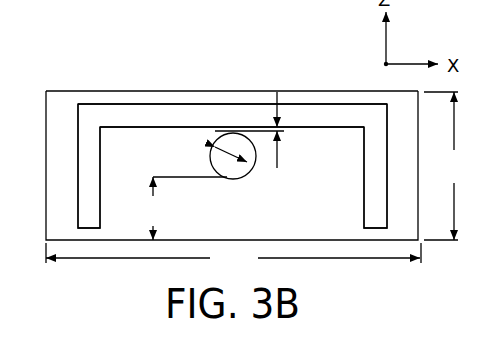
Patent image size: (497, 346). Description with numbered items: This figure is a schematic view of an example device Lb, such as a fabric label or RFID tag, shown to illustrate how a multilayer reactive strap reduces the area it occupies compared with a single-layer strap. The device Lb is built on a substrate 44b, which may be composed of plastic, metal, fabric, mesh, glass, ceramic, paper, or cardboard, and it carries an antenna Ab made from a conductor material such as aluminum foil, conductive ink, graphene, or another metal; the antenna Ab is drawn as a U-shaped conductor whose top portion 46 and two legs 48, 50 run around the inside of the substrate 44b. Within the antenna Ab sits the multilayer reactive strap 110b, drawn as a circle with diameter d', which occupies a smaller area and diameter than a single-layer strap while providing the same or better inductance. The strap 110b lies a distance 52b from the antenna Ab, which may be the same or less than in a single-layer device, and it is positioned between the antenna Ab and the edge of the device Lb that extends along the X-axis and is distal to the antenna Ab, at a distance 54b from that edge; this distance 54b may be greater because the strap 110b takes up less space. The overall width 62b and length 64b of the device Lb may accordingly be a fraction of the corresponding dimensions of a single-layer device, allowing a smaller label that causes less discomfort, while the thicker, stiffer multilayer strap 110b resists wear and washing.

The substrate 44b is at (413, 227).
The device Lb is at (333, 94).
The antenna Ab is at (112, 108).
The channel top wall 46 is at (218, 108).
The left channel leg 48 is at (80, 184).
The right channel leg 50 is at (366, 178).
The distance 52b is at (284, 131).
The multilayer reactive strap 110b is at (231, 178).
The diameter d' is at (213, 147).
The width 62b is at (450, 166).
The length 64b is at (233, 258).
The distance 54b is at (179, 208).